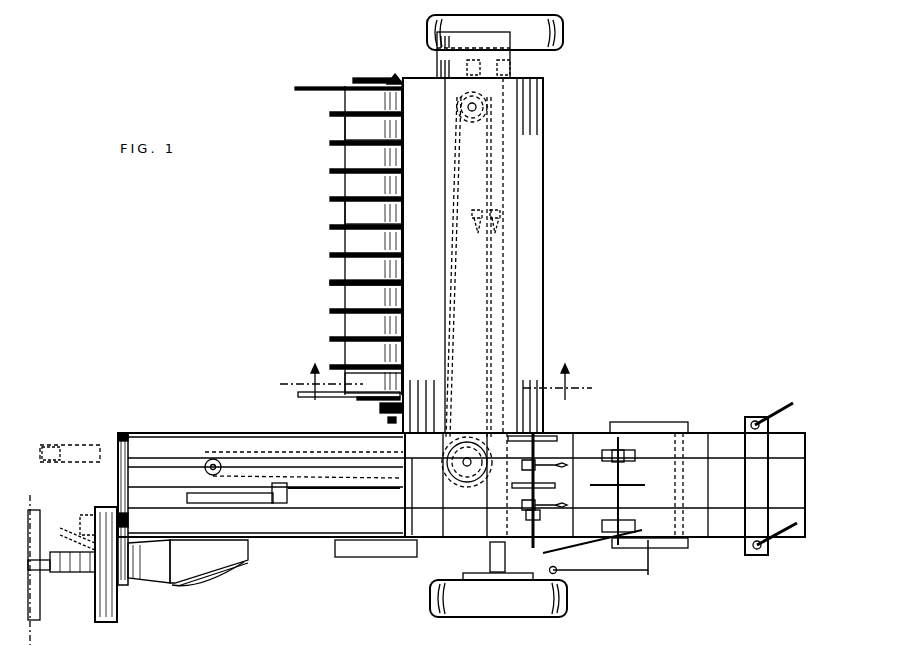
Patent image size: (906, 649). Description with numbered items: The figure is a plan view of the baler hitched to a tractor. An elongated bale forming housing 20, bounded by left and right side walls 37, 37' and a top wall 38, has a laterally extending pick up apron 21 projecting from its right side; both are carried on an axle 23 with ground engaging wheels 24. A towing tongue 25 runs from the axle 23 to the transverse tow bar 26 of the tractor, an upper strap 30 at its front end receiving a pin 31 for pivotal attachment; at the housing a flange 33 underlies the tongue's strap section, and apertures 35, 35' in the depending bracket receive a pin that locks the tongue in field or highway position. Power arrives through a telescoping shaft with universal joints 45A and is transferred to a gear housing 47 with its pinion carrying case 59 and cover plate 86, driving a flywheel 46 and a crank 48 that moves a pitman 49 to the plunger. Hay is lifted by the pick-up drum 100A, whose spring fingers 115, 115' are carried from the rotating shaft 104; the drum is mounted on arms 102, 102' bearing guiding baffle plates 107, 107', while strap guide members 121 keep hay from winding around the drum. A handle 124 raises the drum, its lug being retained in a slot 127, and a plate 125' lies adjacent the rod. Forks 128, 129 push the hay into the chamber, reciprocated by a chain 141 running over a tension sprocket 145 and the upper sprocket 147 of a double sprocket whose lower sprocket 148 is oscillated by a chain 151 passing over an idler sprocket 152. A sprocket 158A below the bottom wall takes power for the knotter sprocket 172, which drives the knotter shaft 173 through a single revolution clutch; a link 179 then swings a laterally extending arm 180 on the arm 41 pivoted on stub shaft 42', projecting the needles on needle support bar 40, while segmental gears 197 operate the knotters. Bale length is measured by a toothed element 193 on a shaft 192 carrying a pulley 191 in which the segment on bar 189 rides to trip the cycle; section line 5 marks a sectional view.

The section line 5 is at (436, 374).
The bale forming housing 20 is at (235, 434).
The pick up apron 21 is at (543, 227).
The axle 23 is at (490, 560).
The ground engaging wheels 24 is at (565, 35).
The towing tongue 25 is at (79, 446).
The tow bar 26 is at (32, 630).
The upper strap 30 is at (53, 462).
The pin 31 is at (46, 565).
The flange 33 is at (118, 470).
The aperture 35 is at (138, 422).
The aperture 35' is at (140, 522).
The left side wall 37 is at (265, 564).
The right side wall 37' is at (265, 420).
The top wall 38 is at (404, 519).
The needle support bar 40 is at (690, 438).
The arm 41 is at (677, 425).
The stub shaft 42' is at (649, 414).
The universal joints 45A is at (80, 573).
The flywheel 46 is at (112, 622).
The gear housing 47 is at (224, 570).
The crank 48 is at (238, 505).
The pitman 49 is at (305, 492).
The pinion carrying case 59 is at (150, 582).
The cover plate 86 is at (202, 588).
The pick-up drum 100A is at (345, 181).
The arm 102 is at (349, 404).
The arm 102' is at (418, 95).
The shaft 104 is at (388, 420).
The guiding baffle plate 107 is at (323, 387).
The guiding baffle plate 107' is at (332, 100).
The spring finger 115 is at (344, 240).
The spring finger 115' is at (345, 272).
The strap guide member 121 is at (345, 121).
The handle 124 is at (366, 78).
The wedge 125' is at (398, 68).
The slot 127 is at (424, 406).
The fork 128 is at (476, 240).
The fork 129 is at (512, 72).
The chain 141 is at (448, 190).
The sprocket 145 is at (472, 122).
The upper sprocket 147 is at (466, 487).
The lower sprocket 148 is at (476, 437).
The chain 151 is at (425, 496).
The idler sprocket 152 is at (207, 472).
The sprocket 158A is at (455, 545).
The knotter sprocket 172 is at (537, 490).
The knotter shaft 173 is at (530, 516).
The link 179 is at (565, 577).
The laterally extending arm 180 is at (652, 575).
The bar 189 is at (572, 552).
The pulley 191 is at (636, 526).
The shaft 192 is at (622, 500).
The toothed element 193 is at (626, 487).
The segmental gear 197 is at (541, 481).